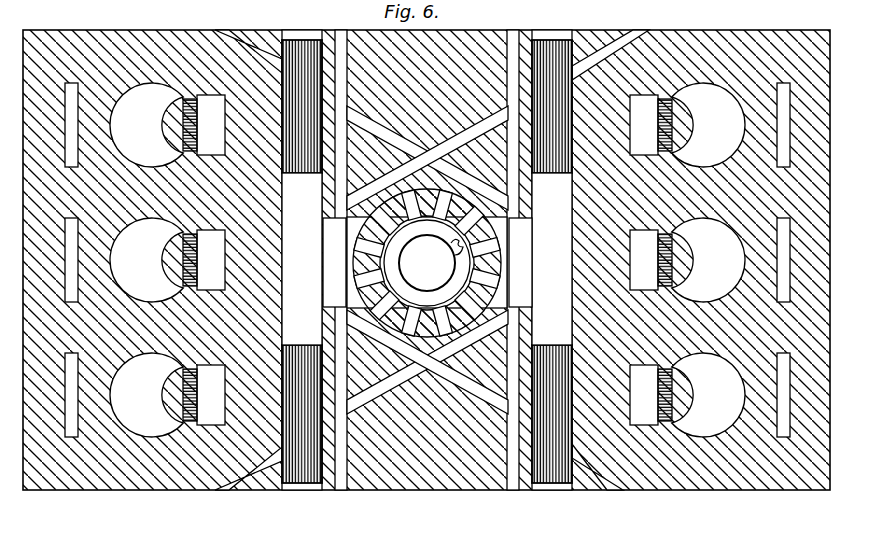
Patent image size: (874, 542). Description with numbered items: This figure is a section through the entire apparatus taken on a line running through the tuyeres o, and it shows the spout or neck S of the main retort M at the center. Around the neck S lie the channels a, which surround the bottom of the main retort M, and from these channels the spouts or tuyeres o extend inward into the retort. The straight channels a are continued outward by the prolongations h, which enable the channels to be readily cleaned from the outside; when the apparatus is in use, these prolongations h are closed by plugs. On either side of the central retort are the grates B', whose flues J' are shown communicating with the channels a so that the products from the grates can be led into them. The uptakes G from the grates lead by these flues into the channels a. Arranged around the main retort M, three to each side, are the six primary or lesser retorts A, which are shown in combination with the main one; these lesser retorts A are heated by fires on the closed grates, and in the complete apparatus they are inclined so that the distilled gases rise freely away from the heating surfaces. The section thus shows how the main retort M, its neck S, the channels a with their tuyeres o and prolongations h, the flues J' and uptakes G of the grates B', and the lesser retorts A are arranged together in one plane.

The lesser retort A is at (427, 260).
The uptake G is at (427, 260).
The grate B' is at (427, 245).
The flue J' is at (427, 259).
The channel a is at (427, 267).
The prolongation h is at (427, 254).
The tuyere o is at (427, 263).
The main retort M is at (427, 263).
The spout or neck S is at (457, 249).